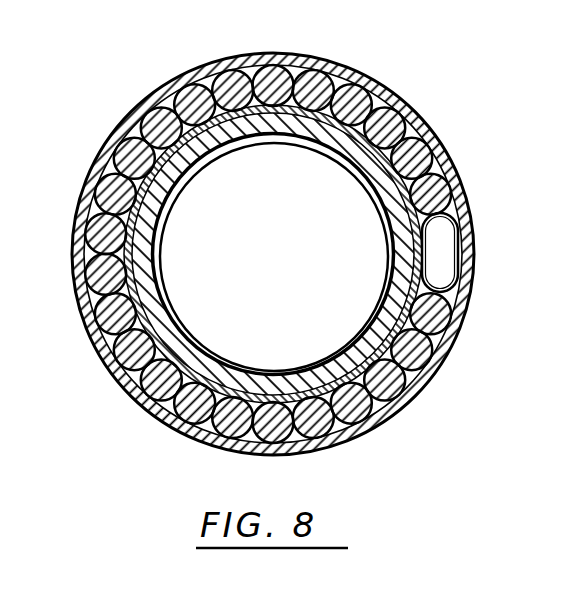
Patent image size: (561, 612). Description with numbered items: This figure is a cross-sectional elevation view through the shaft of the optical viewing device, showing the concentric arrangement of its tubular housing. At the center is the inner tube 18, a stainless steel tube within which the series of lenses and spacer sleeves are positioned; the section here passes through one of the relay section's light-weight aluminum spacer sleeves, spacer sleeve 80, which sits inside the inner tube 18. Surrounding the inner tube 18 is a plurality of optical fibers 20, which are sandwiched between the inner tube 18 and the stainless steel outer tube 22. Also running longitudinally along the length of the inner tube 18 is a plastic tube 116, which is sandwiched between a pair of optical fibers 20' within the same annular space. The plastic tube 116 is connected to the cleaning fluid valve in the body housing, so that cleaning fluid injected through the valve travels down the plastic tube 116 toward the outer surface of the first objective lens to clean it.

The inner tube 18 is at (386, 92).
The optical fibers 20 is at (275, 254).
The pair of optical fibers 20' is at (465, 260).
The outer tube 22 is at (418, 113).
The spacer sleeve 80 is at (356, 167).
The plastic tube 116 is at (460, 288).